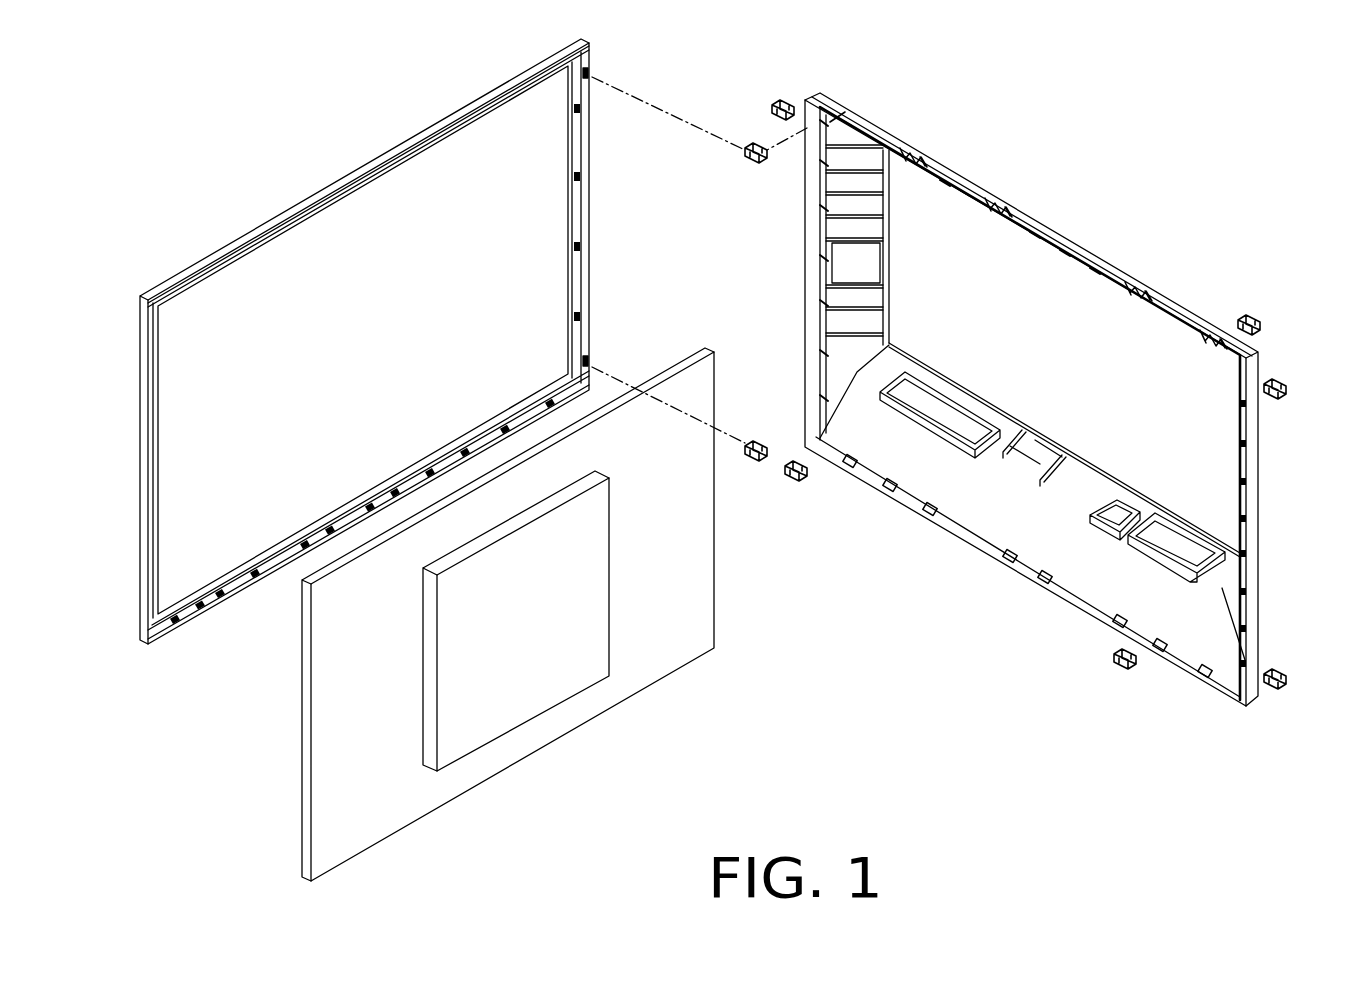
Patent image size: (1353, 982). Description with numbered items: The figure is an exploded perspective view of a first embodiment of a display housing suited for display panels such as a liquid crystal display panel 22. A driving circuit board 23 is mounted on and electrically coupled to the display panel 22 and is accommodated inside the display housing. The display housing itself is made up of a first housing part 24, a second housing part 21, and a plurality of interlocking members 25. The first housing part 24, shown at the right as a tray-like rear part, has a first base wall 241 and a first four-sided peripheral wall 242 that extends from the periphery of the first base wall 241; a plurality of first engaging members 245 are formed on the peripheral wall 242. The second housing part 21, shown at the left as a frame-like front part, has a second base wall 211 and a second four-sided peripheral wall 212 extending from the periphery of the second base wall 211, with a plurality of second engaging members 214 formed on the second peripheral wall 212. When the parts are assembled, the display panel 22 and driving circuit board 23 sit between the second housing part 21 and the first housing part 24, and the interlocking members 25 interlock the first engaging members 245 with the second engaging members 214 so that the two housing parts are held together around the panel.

The second housing part 21 is at (338, 160).
The second base wall 211 is at (567, 228).
The second peripheral wall 212 is at (592, 204).
The second engaging members 214 is at (591, 72).
The liquid crystal display panel 22 is at (306, 705).
The driving circuit board 23 is at (556, 680).
The first housing part 24 is at (1140, 266).
The first base wall 241 is at (963, 490).
The first peripheral wall 242 is at (1168, 305).
The first engaging members 245 is at (840, 113).
The interlocking members 25 is at (772, 106).